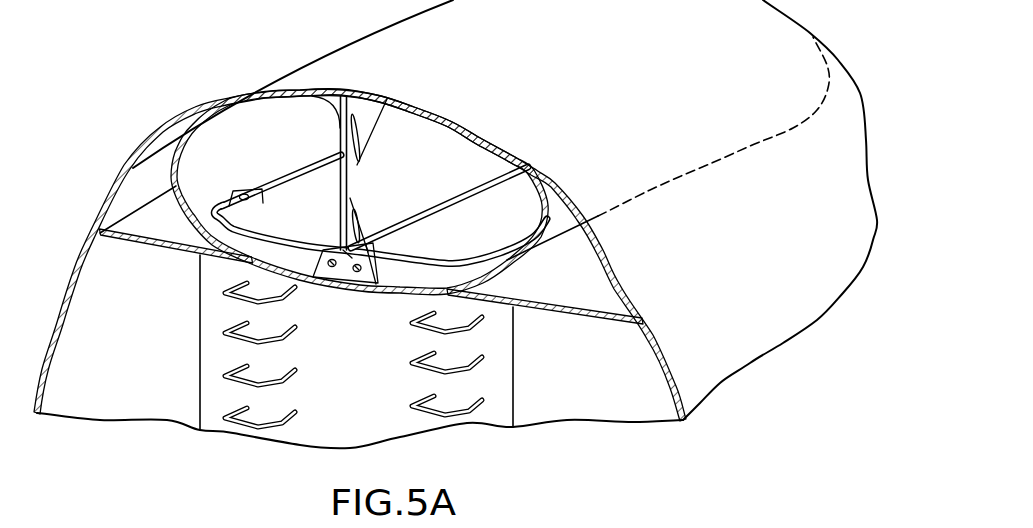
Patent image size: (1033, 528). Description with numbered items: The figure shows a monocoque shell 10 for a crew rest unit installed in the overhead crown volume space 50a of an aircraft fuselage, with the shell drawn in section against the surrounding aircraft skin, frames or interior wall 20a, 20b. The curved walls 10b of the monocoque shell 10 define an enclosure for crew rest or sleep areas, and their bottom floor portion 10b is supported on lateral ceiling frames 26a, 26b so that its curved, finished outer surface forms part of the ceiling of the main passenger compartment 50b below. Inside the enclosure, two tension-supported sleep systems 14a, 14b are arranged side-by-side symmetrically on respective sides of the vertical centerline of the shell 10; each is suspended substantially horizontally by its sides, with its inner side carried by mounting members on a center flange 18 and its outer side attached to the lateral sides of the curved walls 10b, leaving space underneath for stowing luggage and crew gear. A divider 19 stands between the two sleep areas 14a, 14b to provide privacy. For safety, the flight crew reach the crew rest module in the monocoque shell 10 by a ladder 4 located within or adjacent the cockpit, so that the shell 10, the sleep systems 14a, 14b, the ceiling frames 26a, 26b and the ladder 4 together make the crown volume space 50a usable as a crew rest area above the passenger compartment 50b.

The monocoque shell 10 is at (152, 178).
The curved walls / bottom floor portion 10b is at (338, 286).
The tension-supported sleep system 14a is at (270, 216).
The tension-supported sleep system 14b is at (464, 237).
The center flange 18 is at (384, 287).
The divider 19 is at (345, 136).
The aircraft skin, frames, internal support structure or interior wall 20a is at (648, 193).
The aircraft skin, frames, internal support structure or interior wall 20b is at (668, 148).
The lateral ceiling frame 26a is at (160, 250).
The lateral ceiling frame 26b is at (583, 316).
The overhead crown volume space 50a is at (160, 224).
The main passenger compartment 50b is at (130, 396).
The ladder 4 is at (233, 418).